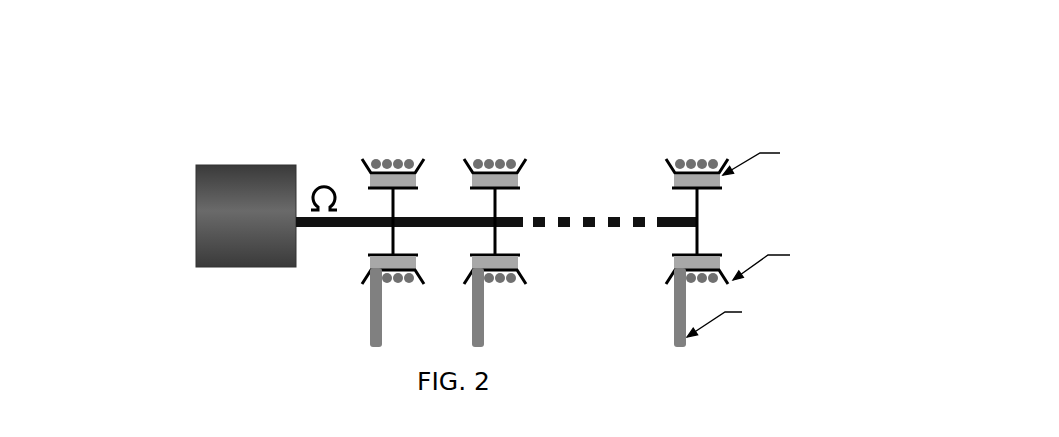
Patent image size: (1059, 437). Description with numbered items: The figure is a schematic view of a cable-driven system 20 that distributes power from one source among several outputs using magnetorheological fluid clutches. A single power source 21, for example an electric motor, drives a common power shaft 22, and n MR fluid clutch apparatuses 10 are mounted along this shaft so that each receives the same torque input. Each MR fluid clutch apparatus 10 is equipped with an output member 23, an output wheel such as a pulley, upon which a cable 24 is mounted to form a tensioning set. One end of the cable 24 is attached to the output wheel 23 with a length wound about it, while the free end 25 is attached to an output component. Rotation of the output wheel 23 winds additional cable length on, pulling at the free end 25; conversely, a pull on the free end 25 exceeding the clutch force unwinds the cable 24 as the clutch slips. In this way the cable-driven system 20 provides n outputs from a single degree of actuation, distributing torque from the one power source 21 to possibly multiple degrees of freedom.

The cable-driven system 20 is at (431, 84).
The power source 21 is at (240, 163).
The common power shaft 22 is at (322, 228).
The output member 23 is at (463, 158).
The MR fluid clutch apparatus 10 is at (495, 207).
The cable 24 is at (470, 330).
The free end 25 is at (373, 348).